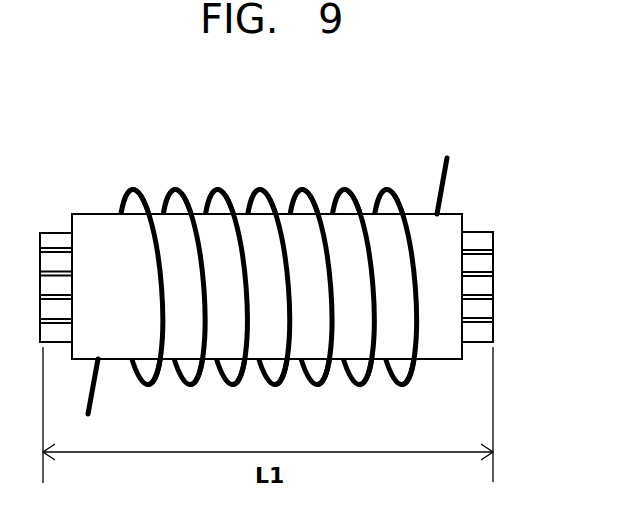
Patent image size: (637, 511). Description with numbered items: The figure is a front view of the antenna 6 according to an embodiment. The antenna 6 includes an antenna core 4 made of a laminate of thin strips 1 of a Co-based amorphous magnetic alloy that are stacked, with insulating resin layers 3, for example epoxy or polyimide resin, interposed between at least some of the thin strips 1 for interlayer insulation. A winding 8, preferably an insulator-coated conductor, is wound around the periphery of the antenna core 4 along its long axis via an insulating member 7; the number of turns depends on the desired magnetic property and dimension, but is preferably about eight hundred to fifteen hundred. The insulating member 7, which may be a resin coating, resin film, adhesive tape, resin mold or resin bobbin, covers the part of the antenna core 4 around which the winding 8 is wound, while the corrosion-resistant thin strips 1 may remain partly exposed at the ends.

The thin strips of Co-based amorphous magnetic alloy 1 is at (501, 263).
The insulating resin layer 3 is at (501, 263).
The antenna core 4 is at (479, 232).
The antenna 6 is at (289, 260).
The insulating member 7 is at (438, 340).
The winding 8 is at (304, 279).